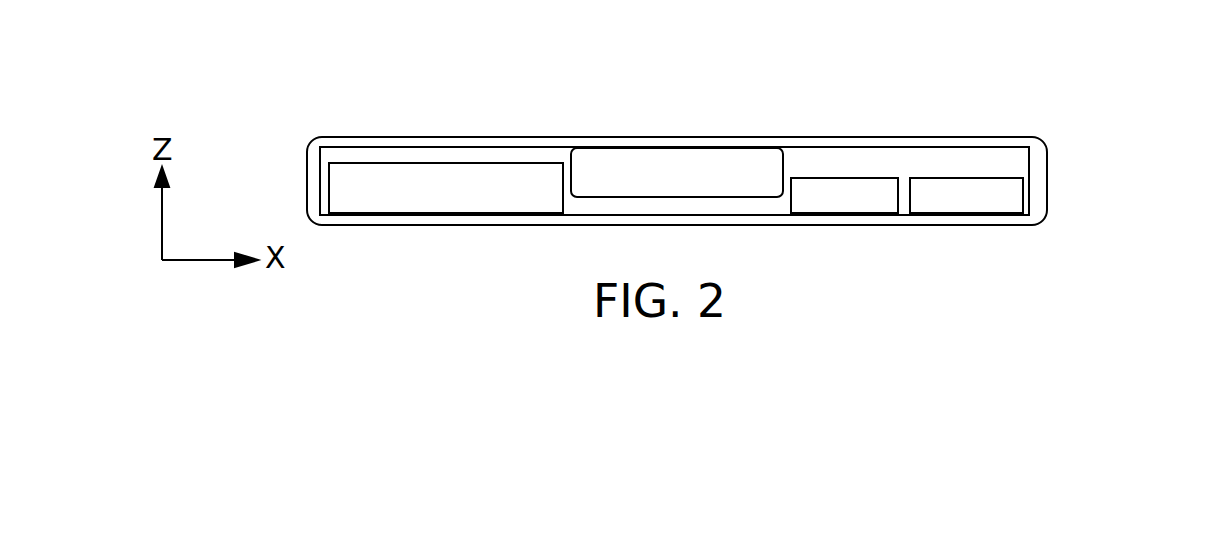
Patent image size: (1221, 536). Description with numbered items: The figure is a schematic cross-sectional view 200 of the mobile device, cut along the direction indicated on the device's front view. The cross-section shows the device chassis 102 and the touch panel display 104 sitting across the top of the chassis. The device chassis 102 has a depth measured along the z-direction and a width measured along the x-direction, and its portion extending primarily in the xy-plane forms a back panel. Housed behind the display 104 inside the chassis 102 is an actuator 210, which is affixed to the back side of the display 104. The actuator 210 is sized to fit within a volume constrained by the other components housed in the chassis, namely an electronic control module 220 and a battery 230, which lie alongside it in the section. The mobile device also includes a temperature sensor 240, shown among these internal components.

The electronic device 200 is at (1103, 204).
The device chassis 102 is at (1047, 182).
The touch panel display 104 is at (872, 140).
The actuator 210 is at (701, 189).
The electronic control module 220 is at (470, 201).
The battery 230 is at (955, 195).
The temperature sensor 240 is at (838, 205).